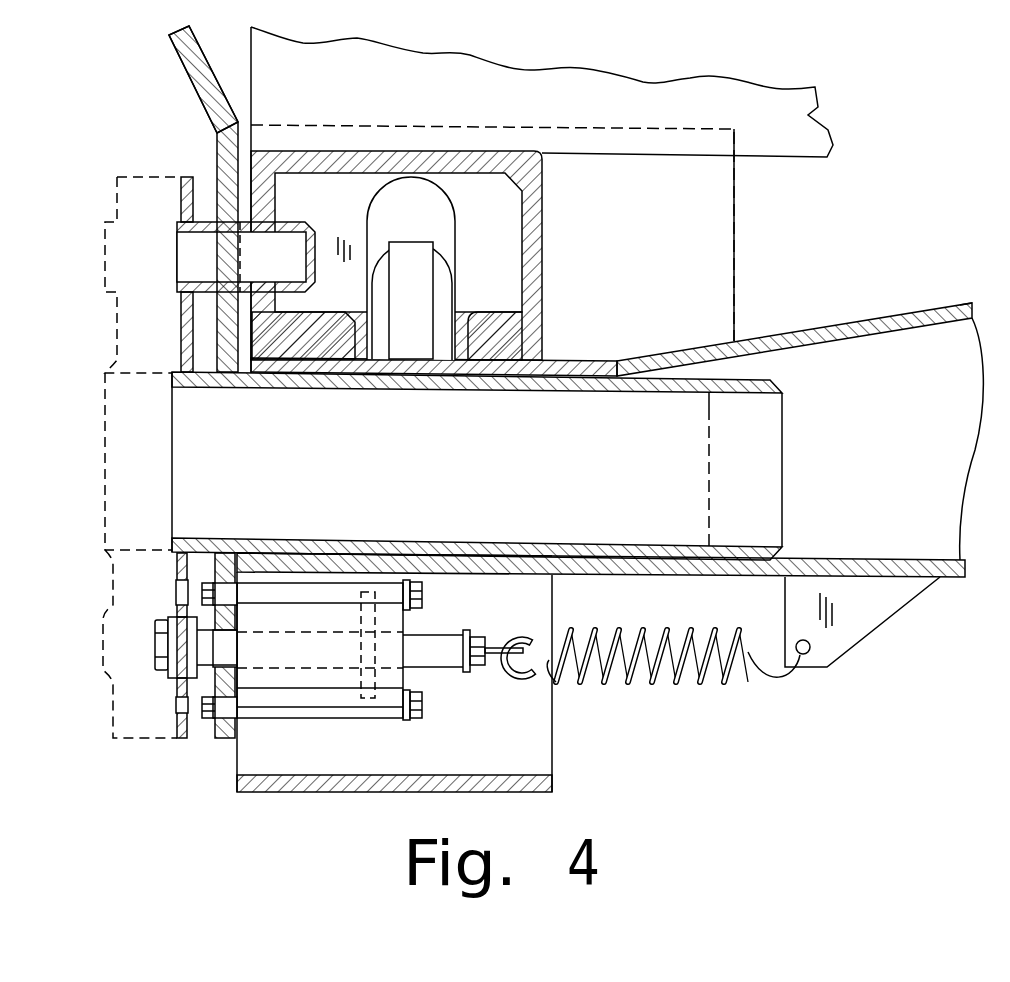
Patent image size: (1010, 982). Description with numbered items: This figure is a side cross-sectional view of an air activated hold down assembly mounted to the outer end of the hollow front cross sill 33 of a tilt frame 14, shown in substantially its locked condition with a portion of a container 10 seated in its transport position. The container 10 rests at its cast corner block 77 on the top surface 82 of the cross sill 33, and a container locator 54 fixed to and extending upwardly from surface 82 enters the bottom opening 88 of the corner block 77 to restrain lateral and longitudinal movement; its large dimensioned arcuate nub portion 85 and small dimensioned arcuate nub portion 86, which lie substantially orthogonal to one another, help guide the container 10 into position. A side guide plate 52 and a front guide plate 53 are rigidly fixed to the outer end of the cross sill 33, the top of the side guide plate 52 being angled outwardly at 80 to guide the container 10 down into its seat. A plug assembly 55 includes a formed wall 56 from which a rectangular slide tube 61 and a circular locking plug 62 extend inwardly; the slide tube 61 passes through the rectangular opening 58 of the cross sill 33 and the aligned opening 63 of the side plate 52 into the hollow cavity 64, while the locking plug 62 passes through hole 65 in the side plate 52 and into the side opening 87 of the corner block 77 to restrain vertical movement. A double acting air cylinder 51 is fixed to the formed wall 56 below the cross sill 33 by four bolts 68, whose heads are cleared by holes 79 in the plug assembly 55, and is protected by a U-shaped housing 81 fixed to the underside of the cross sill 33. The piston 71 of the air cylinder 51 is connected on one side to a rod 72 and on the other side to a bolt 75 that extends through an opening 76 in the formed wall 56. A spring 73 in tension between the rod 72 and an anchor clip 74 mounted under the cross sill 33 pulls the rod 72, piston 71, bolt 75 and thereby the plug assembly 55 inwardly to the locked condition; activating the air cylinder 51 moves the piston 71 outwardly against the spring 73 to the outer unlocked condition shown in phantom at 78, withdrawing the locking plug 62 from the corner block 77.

The container 10 is at (818, 115).
The tilt frame 14 is at (883, 305).
The front cross sill 33 is at (950, 302).
The double acting air cylinder 51 is at (283, 720).
The side guide plate 52 is at (217, 155).
The front guide plate 53 is at (734, 237).
The container locator 54 is at (410, 242).
The plug assembly 55 is at (160, 484).
The formed wall 56 is at (181, 202).
The rectangular opening 58 is at (255, 558).
The slide tube 61 is at (745, 389).
The locking plug 62 is at (300, 222).
The rectangular opening 63 is at (228, 556).
The hollow cavity 64 is at (898, 460).
The hole 65 is at (174, 271).
The bolts 68 is at (422, 592).
The piston 71 is at (373, 653).
The rod 72 is at (452, 672).
The spring 73 is at (643, 683).
The anchor clip 74 is at (875, 636).
The bolt 75 is at (160, 670).
The opening 76 is at (245, 672).
The cast corner block 77 is at (545, 187).
The unlocked condition 78 is at (103, 385).
The holes 79 is at (178, 700).
The angled top 80 is at (180, 50).
The U-shaped housing 81 is at (555, 770).
The top surface 82 is at (562, 360).
The large dimensioned arcuate nub portion 85 is at (415, 290).
The small dimensioned arcuate nub portion 86 is at (438, 265).
The side opening 87 is at (277, 197).
The bottom opening 88 is at (483, 362).